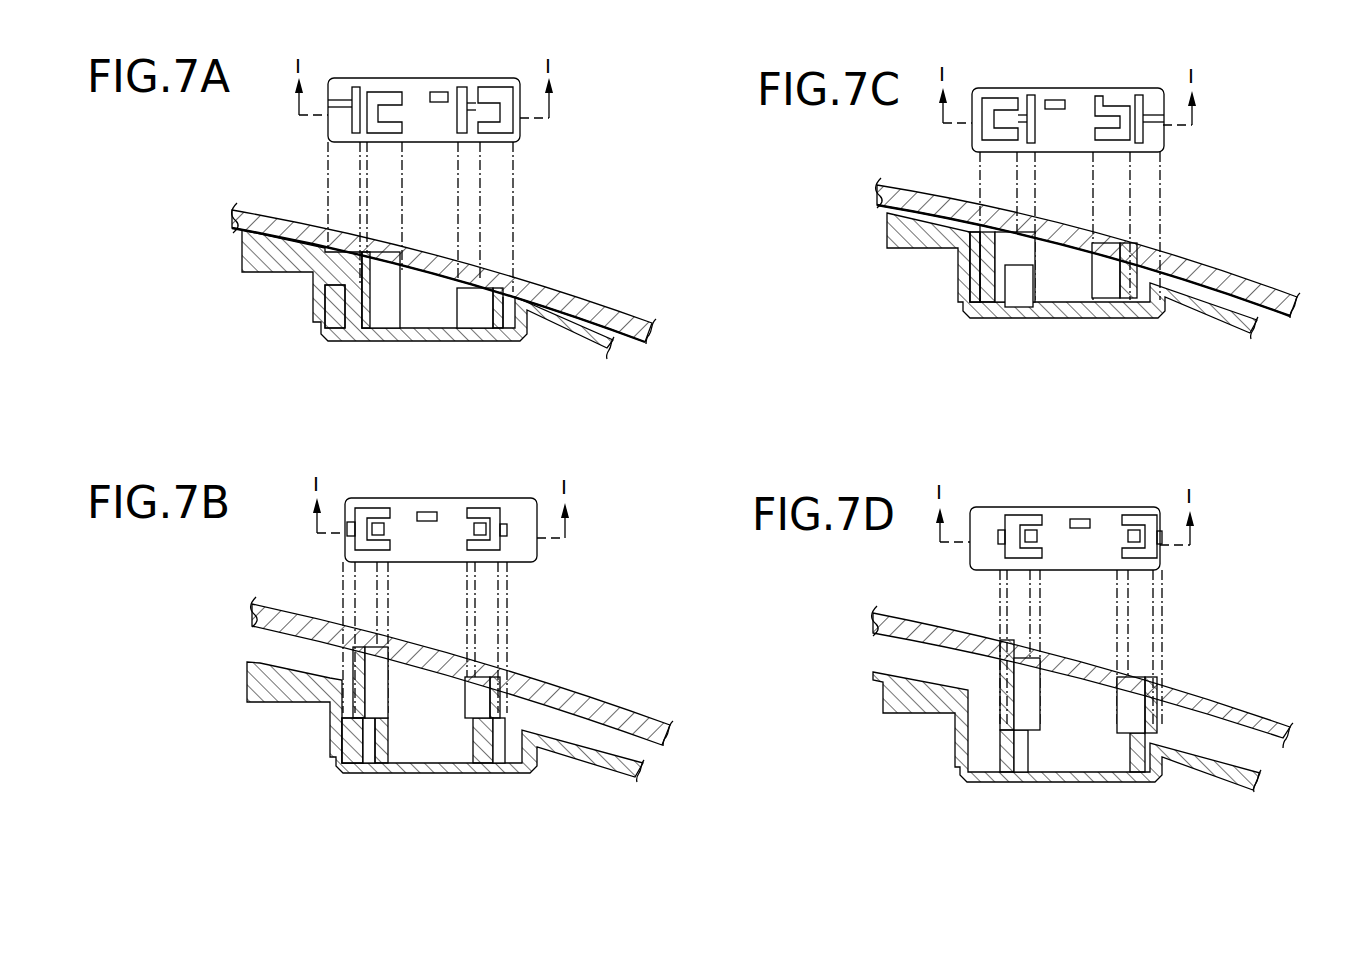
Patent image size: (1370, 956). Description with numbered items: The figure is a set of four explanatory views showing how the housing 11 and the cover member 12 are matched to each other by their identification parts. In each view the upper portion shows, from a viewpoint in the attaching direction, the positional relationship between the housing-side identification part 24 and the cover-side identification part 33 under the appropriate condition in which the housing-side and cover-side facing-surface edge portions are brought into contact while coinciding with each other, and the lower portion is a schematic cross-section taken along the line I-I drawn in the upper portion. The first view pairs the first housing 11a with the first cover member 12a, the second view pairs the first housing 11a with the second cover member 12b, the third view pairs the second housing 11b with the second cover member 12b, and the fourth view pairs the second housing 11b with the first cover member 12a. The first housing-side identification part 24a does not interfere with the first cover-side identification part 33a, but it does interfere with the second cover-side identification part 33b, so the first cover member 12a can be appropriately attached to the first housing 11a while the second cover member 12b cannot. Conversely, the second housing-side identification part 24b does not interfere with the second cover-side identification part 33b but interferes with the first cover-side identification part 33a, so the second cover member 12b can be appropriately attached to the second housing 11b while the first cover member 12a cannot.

In FIG. 7A, the housing 11 is at (409, 333).
In FIG. 7B, the housing 11 is at (432, 761).
In FIG. 7C, the housing 11 is at (1051, 311).
In FIG. 7D, the housing 11 is at (1053, 768).
In FIG. 7A, the first housing 11a is at (318, 350).
In FIG. 7B, the first housing 11a is at (335, 770).
In FIG. 7C, the second housing 11b is at (960, 322).
In FIG. 7D, the second housing 11b is at (955, 778).
In FIG. 7A, the cover member 12 is at (472, 273).
In FIG. 7B, the cover member 12 is at (484, 671).
In FIG. 7C, the cover member 12 is at (1110, 246).
In FIG. 7D, the cover member 12 is at (1108, 677).
In FIG. 7A, the first cover member 12a is at (593, 290).
In FIG. 7D, the first cover member 12a is at (1220, 690).
In FIG. 7B, the second cover member 12b is at (597, 682).
In FIG. 7C, the second cover member 12b is at (1223, 252).
In FIG. 7A, the housing-side identification part 24 is at (232, 296).
In FIG. 7B, the housing-side identification part 24 is at (320, 722).
In FIG. 7C, the housing-side identification part 24 is at (872, 267).
In FIG. 7D, the housing-side identification part 24 is at (952, 730).
In FIG. 7A, the first housing-side identification part 24a is at (312, 305).
In FIG. 7B, the first housing-side identification part 24a is at (327, 723).
In FIG. 7C, the second housing-side identification part 24b is at (957, 284).
In FIG. 7D, the second housing-side identification part 24b is at (955, 733).
In FIG. 7A, the cover-side identification part 33 is at (432, 248).
In FIG. 7B, the cover-side identification part 33 is at (426, 641).
In FIG. 7C, the cover-side identification part 33 is at (1058, 230).
In FIG. 7D, the cover-side identification part 33 is at (1078, 658).
In FIG. 7A, the first cover-side identification part 33a is at (410, 292).
In FIG. 7D, the first cover-side identification part 33a is at (1042, 687).
In FIG. 7B, the second cover-side identification part 33b is at (417, 682).
In FIG. 7C, the second cover-side identification part 33b is at (1048, 263).